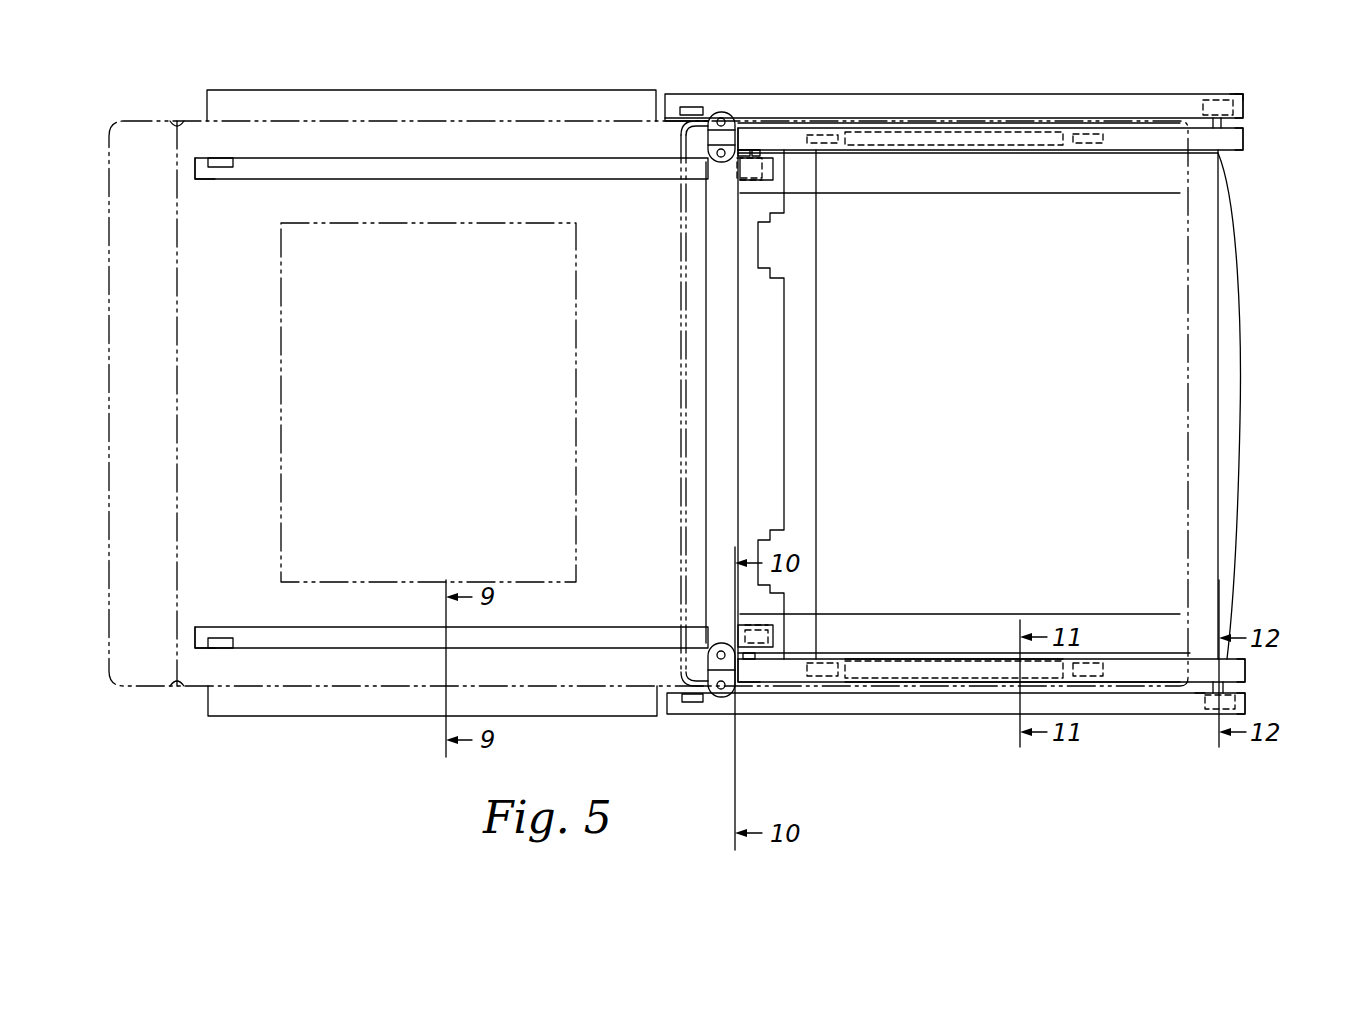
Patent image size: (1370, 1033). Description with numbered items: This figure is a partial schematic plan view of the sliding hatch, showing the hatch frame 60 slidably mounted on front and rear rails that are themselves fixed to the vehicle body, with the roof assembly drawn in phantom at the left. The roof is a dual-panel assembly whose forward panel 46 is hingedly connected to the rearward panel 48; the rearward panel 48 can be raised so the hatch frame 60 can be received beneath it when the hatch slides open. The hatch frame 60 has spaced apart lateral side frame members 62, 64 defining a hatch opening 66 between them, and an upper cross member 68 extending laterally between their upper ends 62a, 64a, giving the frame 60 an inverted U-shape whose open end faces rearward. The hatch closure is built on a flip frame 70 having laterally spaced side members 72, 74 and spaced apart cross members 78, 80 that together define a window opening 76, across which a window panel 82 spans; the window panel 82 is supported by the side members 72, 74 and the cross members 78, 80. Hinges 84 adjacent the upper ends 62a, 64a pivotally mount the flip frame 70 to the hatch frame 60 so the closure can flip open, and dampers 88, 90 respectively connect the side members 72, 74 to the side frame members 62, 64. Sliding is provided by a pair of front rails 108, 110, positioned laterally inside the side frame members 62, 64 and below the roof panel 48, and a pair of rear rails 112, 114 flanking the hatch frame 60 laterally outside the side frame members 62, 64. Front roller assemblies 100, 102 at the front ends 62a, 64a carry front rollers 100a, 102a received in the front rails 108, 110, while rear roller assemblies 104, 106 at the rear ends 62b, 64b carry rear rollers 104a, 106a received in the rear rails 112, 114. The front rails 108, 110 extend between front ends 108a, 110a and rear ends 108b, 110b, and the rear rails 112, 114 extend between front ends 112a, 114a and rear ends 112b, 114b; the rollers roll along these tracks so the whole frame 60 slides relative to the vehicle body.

The forward panel 46 is at (142, 178).
The rearward panel 48 is at (507, 197).
The hatch frame 60 is at (1012, 680).
The lateral side frame member 62 is at (955, 658).
The upper end 62a is at (780, 665).
The rear end 62b is at (1243, 670).
The lateral side frame member 64 is at (948, 150).
The upper end 64a is at (765, 140).
The rear end 64b is at (1243, 138).
The hatch opening 66 is at (1085, 660).
The upper cross member 68 is at (795, 462).
The flip frame 70 is at (915, 643).
The lateral side member 72 is at (1128, 627).
The lateral side member 74 is at (1128, 180).
The window opening 76 is at (835, 614).
The cross member 78 is at (722, 403).
The cross member 80 is at (1200, 452).
The window panel 82 is at (686, 322).
The hinge 84 is at (718, 138).
The damper 88 is at (985, 672).
The damper 90 is at (1022, 140).
The front roller assembly 100 is at (790, 643).
The front roller 100a is at (795, 633).
The front roller assembly 102 is at (780, 185).
The front roller 102a is at (748, 182).
The rear roller assembly 104 is at (1190, 703).
The rear roller 104a is at (1212, 712).
The rear roller assembly 106 is at (1240, 92).
The rear roller 106a is at (1216, 98).
The front rail 108 is at (362, 627).
The front end 108a is at (205, 630).
The rear end 108b is at (770, 645).
The front rail 110 is at (353, 179).
The front end 110a is at (205, 179).
The rear end 110b is at (772, 170).
The rear rail 112 is at (1098, 703).
The front end 112a is at (673, 707).
The rear end 112b is at (1245, 702).
The rear rail 114 is at (1098, 107).
The front end 114a is at (665, 93).
The rear end 114b is at (1245, 106).